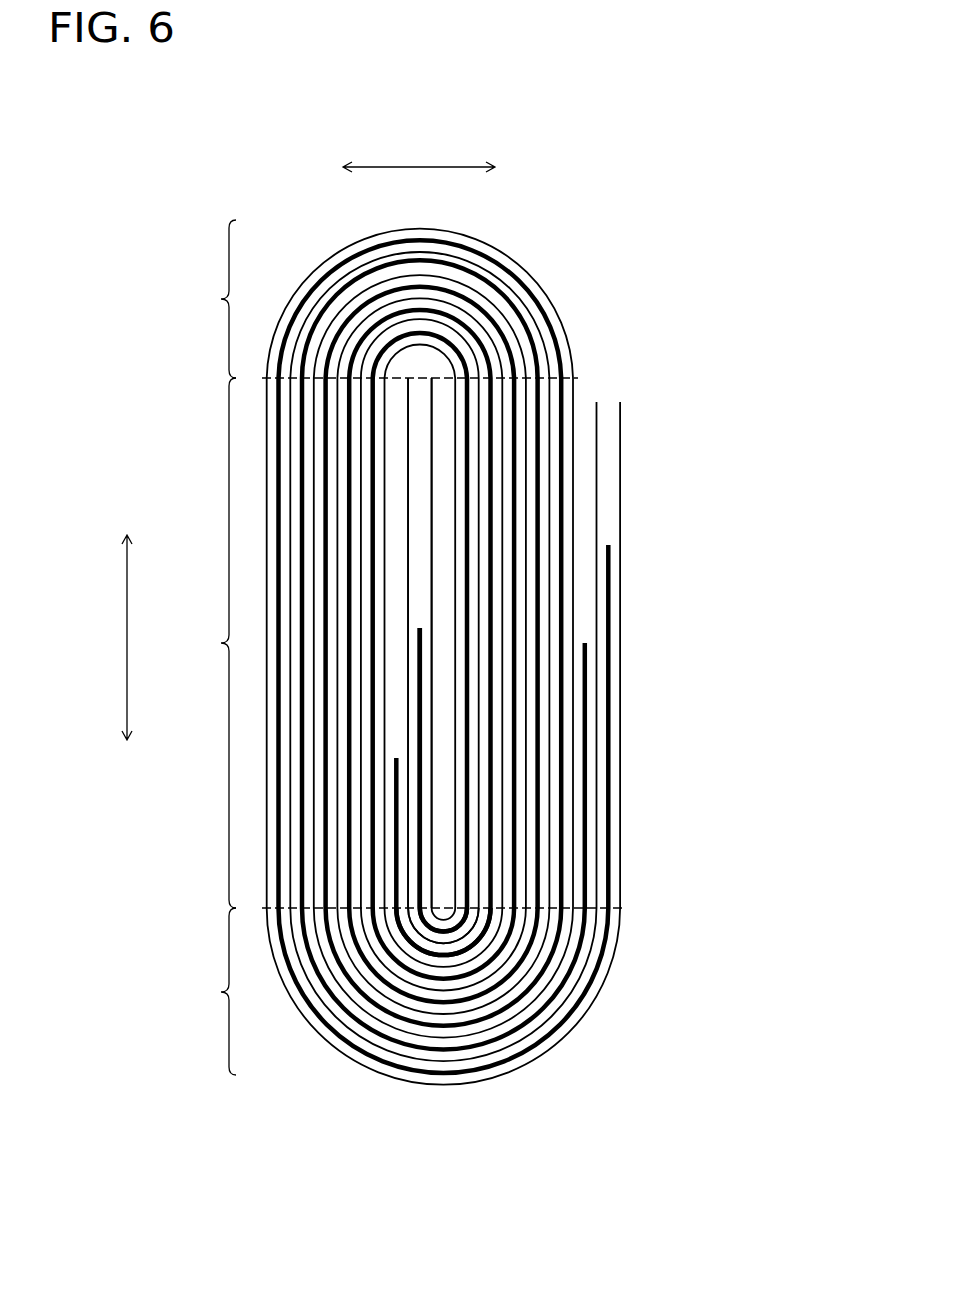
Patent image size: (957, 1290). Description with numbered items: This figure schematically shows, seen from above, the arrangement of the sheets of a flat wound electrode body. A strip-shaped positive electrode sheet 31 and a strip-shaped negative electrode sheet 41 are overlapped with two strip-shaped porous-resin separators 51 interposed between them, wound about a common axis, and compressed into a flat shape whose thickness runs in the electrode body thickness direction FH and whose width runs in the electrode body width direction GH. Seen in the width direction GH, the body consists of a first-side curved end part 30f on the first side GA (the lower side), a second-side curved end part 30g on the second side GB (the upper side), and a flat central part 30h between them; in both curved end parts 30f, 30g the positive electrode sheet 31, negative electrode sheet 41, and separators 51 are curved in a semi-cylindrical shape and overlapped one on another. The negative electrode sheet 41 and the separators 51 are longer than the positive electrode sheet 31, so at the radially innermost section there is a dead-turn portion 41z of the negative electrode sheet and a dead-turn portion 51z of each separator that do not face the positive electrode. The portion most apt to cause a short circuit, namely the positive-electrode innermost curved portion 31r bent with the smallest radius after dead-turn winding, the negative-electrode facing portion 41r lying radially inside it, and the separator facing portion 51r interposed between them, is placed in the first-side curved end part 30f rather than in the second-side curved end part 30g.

The positive electrode sheet 31 is at (587, 710).
The negative electrode sheet 41 is at (610, 570).
The separator 51 is at (618, 528).
The dead-turn portion of separator 51z is at (410, 434).
The dead-turn portion of negative electrode sheet 41z is at (425, 660).
The positive-electrode innermost curved portion 31r is at (449, 956).
The negative-electrode facing portion 41r is at (447, 933).
The separator facing portion 51r is at (438, 945).
The second-side curved end part 30g is at (203, 299).
The central part 30h is at (203, 643).
The first-side curved end part 30f is at (200, 991).
The electrode body thickness direction FH is at (419, 152).
The electrode body width direction GH is at (103, 637).
The first side GA is at (129, 762).
The second side GB is at (129, 519).